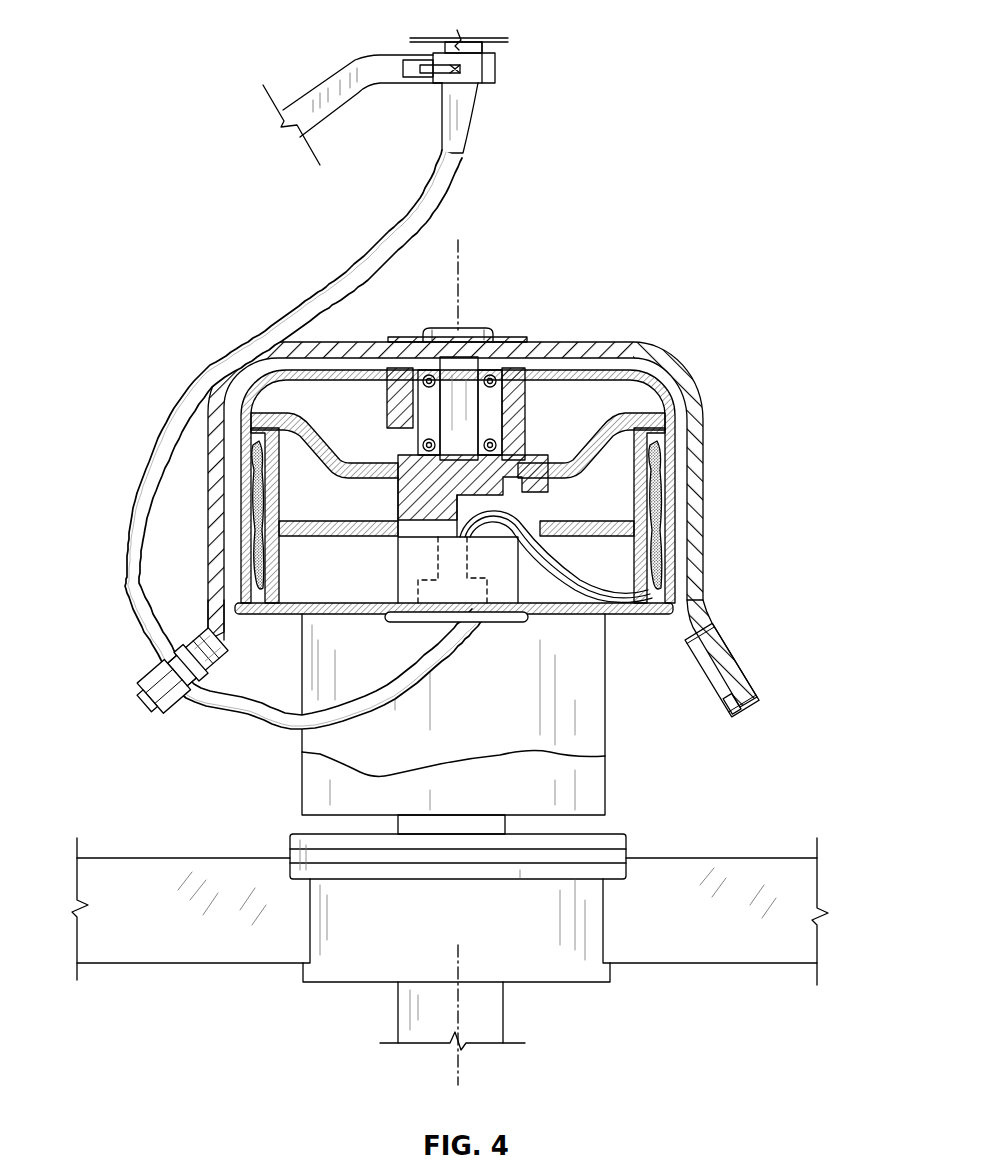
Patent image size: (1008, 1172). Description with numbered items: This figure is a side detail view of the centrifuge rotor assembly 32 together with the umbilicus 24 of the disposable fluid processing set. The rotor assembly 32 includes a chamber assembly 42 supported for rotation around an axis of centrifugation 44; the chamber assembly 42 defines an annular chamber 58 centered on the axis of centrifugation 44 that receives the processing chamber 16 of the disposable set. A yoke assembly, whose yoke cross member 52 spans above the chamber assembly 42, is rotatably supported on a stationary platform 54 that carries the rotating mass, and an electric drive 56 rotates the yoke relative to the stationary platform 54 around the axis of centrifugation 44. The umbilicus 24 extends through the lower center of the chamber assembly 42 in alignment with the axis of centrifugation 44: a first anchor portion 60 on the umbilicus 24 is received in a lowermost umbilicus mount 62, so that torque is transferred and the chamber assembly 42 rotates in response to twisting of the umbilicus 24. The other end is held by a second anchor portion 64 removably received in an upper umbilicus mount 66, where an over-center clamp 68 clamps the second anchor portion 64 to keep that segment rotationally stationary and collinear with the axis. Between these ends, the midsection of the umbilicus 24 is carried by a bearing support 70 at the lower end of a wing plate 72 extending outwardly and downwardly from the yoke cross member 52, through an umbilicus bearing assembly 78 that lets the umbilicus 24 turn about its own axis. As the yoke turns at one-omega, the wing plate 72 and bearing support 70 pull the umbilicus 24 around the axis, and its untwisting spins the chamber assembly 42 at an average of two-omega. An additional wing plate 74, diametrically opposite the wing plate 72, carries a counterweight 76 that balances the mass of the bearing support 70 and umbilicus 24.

The processing chamber 16 is at (653, 513).
The umbilicus 24 is at (354, 266).
The centrifuge rotor assembly 32 is at (773, 199).
The chamber assembly 42 is at (677, 378).
The axis of centrifugation 44 is at (462, 282).
The yoke cross member 52 is at (404, 338).
The stationary platform 54 is at (717, 965).
The electric drive 56 is at (562, 965).
The annular chamber 58 is at (657, 472).
The first anchor portion 60 is at (493, 587).
The lowermost umbilicus mount 62 is at (466, 612).
The second anchor portion 64 is at (508, 43).
The upper umbilicus mount 66 is at (392, 52).
The over-center clamp 68 is at (485, 72).
The bearing support 70 is at (150, 666).
The wing plate 72 is at (215, 593).
The additional wing plate 74 is at (703, 610).
The counterweight 76 is at (732, 692).
The umbilicus bearing assembly 78 is at (155, 713).